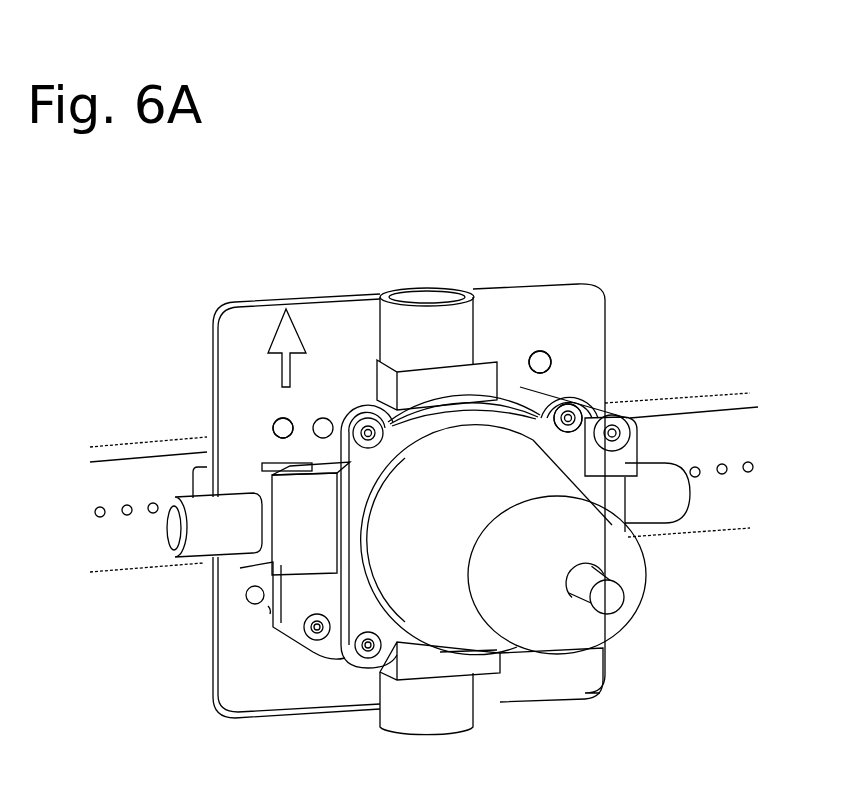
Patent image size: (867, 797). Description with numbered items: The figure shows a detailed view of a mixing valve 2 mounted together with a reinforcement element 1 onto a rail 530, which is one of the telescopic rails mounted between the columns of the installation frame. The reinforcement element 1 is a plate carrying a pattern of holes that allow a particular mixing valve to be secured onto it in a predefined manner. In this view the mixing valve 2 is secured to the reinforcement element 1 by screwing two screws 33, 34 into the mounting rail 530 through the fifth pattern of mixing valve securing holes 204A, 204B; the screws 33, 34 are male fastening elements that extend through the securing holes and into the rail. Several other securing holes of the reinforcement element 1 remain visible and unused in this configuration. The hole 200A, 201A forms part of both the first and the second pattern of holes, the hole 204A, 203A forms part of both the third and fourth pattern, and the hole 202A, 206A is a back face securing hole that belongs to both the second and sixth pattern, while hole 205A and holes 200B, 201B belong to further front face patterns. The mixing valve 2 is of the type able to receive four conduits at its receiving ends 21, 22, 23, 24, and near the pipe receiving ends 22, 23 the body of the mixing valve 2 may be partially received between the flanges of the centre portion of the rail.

The reinforcement element 1 is at (258, 715).
The mixing valve 2 is at (450, 522).
The receiving end 21 is at (450, 346).
The receiving end 22 is at (678, 503).
The receiving end 23 is at (228, 535).
The receiving end 24 is at (450, 719).
The screw 33 is at (609, 431).
The screw 34 is at (317, 642).
The rail 530 is at (713, 409).
The front face mixing valve securing hole 200A is at (543, 365).
The front face mixing valve securing hole 201A is at (565, 338).
The back face mixing valve securing hole 202A is at (276, 424).
The back face mixing valve securing hole 206A is at (217, 419).
The front face mixing valve securing hole 205A is at (322, 418).
The front face mixing valve securing hole 204A is at (577, 396).
The front face mixing valve securing hole 203A is at (645, 379).
The front face mixing valve securing hole 200B is at (246, 594).
The front face mixing valve securing hole 201B is at (268, 611).
The front face mixing valve securing hole 204B is at (286, 643).